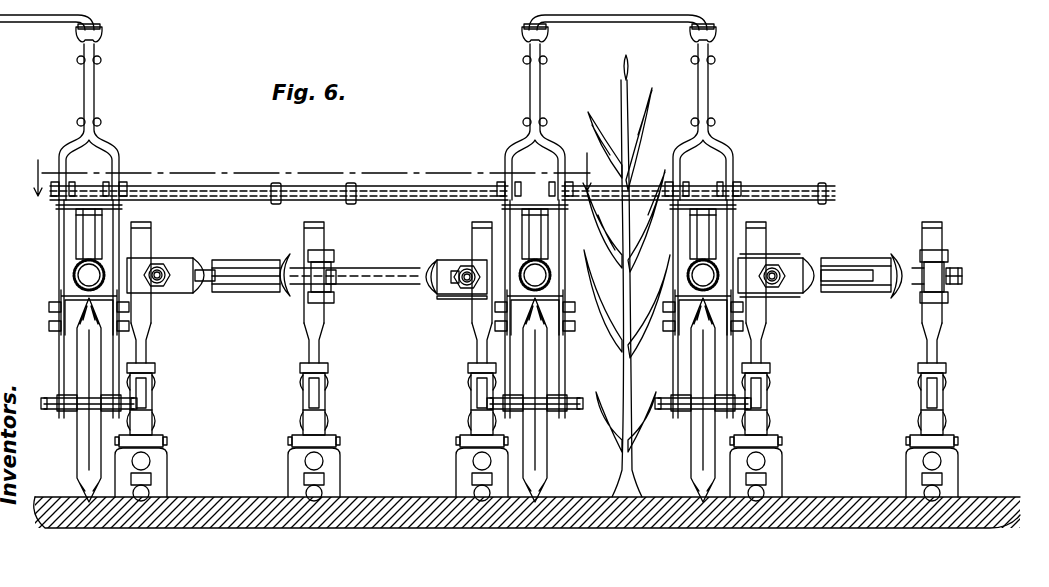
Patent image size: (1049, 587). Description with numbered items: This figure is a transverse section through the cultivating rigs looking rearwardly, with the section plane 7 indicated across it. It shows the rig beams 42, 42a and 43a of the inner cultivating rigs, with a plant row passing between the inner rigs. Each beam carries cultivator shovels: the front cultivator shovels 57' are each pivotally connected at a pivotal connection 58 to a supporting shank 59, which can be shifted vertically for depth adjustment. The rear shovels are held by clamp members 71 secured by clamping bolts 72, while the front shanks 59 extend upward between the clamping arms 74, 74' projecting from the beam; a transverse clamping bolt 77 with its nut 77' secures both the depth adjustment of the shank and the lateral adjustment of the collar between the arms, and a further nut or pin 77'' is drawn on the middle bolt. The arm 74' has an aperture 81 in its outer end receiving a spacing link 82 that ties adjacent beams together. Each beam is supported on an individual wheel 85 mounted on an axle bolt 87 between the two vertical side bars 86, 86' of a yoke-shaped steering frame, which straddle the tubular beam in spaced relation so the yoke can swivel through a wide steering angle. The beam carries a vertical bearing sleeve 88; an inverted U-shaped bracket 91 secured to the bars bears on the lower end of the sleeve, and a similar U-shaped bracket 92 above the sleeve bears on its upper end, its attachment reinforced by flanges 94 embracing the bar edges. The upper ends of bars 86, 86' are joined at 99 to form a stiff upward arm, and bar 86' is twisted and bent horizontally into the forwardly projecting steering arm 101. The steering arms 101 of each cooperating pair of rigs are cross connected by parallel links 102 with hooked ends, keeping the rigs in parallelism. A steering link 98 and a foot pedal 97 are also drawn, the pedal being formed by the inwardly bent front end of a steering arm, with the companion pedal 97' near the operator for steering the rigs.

The section plane 7 is at (313, 174).
The rig beam 42 is at (770, 266).
The rig beam 42a is at (490, 292).
The rig beam 43a is at (73, 276).
The front cultivator shovel 57' is at (536, 474).
The pivotal connection 58 is at (160, 420).
The supporting shank 59 is at (152, 322).
The clamp member 71 is at (332, 290).
The clamping bolt 72 is at (963, 278).
The clamping arm 74 is at (466, 271).
The clamping arm 74' is at (547, 279).
The clamping bolt 77 is at (502, 248).
The nut 77' is at (507, 246).
The pin 77'' is at (464, 242).
The aperture 81 is at (205, 282).
The spacing link 82 is at (385, 258).
The supporting wheel 85 is at (86, 452).
The vertical side bar 86 is at (536, 357).
The vertical side bar 86' is at (371, 373).
The axle bolt 87 is at (572, 406).
The bearing sleeve 88 is at (78, 233).
The U-shaped bracket 91 is at (62, 296).
The U-shaped bracket 92 is at (58, 212).
The flanges 94 is at (114, 176).
The foot pedal 97 is at (279, 170).
The shaft 97' is at (610, 208).
The steering link 98 is at (836, 188).
The joined upper ends 99 is at (94, 96).
The steering arm 101 is at (102, 30).
The parallel link 102 is at (353, 34).